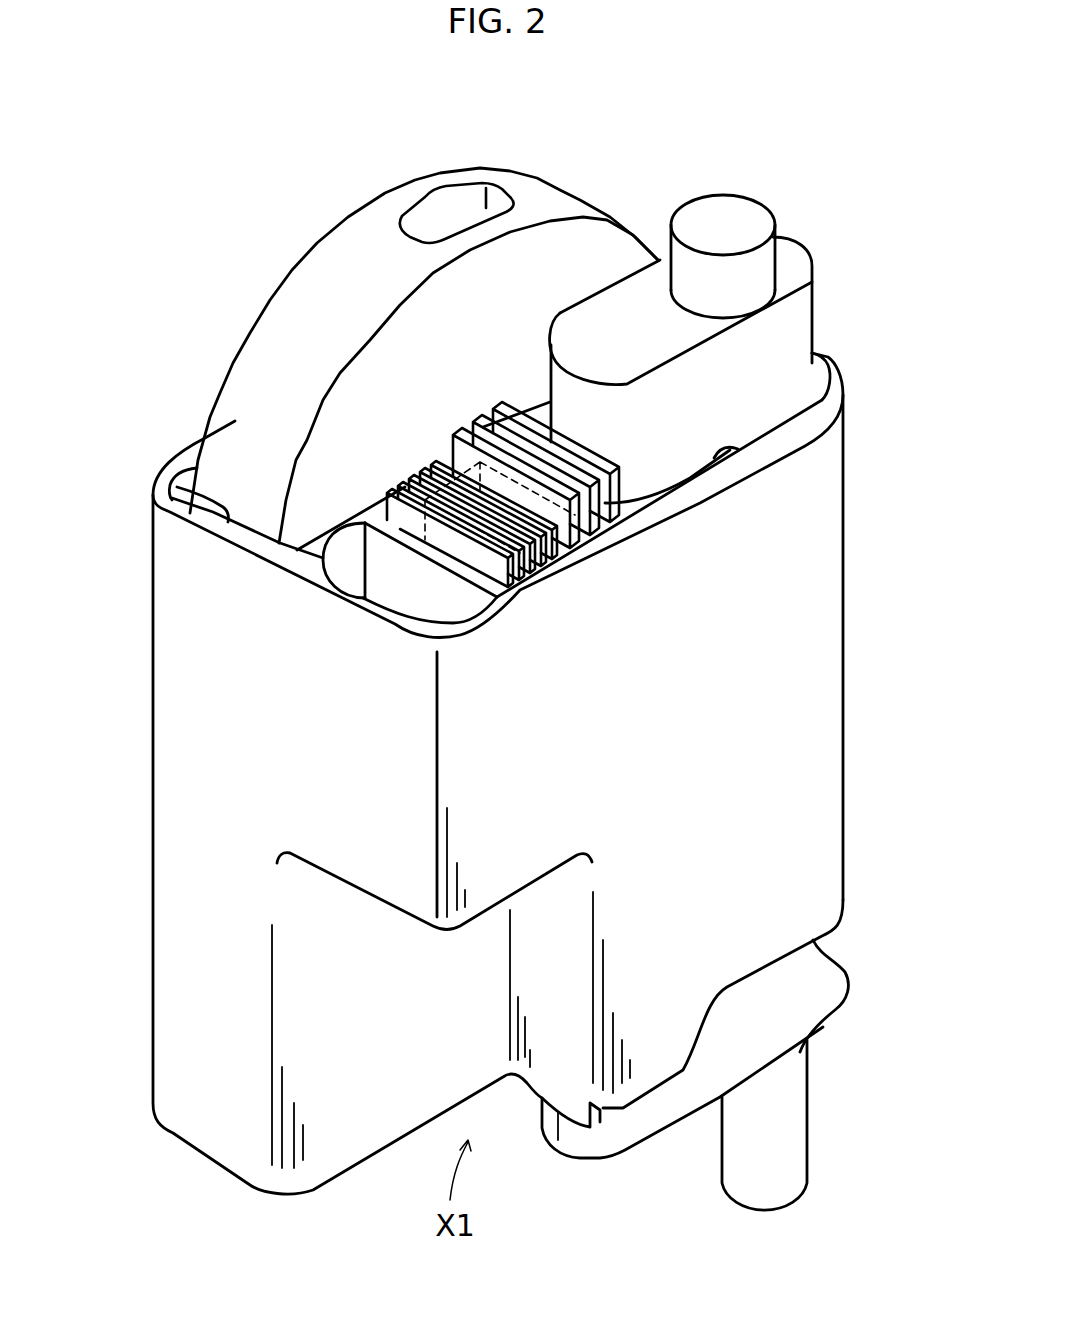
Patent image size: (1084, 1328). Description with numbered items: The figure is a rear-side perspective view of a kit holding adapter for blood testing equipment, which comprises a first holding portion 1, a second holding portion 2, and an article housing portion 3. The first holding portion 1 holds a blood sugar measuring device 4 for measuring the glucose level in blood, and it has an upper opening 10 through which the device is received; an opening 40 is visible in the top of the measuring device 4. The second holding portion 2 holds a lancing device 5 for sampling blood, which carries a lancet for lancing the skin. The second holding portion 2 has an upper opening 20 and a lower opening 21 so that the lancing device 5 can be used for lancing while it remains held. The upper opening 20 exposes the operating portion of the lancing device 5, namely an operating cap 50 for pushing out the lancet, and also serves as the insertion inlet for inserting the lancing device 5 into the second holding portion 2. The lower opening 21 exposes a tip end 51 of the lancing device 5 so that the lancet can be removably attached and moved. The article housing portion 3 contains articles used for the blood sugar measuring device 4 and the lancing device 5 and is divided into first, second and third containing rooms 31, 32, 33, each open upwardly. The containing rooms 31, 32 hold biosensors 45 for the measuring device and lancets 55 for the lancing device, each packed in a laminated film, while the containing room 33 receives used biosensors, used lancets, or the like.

The first holding portion 1 is at (142, 753).
The second holding portion 2 is at (858, 643).
The article housing portion 3 is at (394, 923).
The blood sugar measuring device 4 is at (424, 317).
The lancing device 5 is at (711, 329).
The upper opening 10 is at (155, 488).
The upper opening 20 is at (750, 452).
The lower opening 21 is at (760, 968).
The first containing room 31 is at (625, 520).
The second containing room 32 is at (383, 498).
The third containing room 33 is at (440, 615).
The handle opening 40 is at (447, 203).
The biosensors 45 is at (427, 463).
The operating cap 50 is at (753, 215).
The tip end 51 is at (787, 1150).
The lancets 55 is at (490, 412).